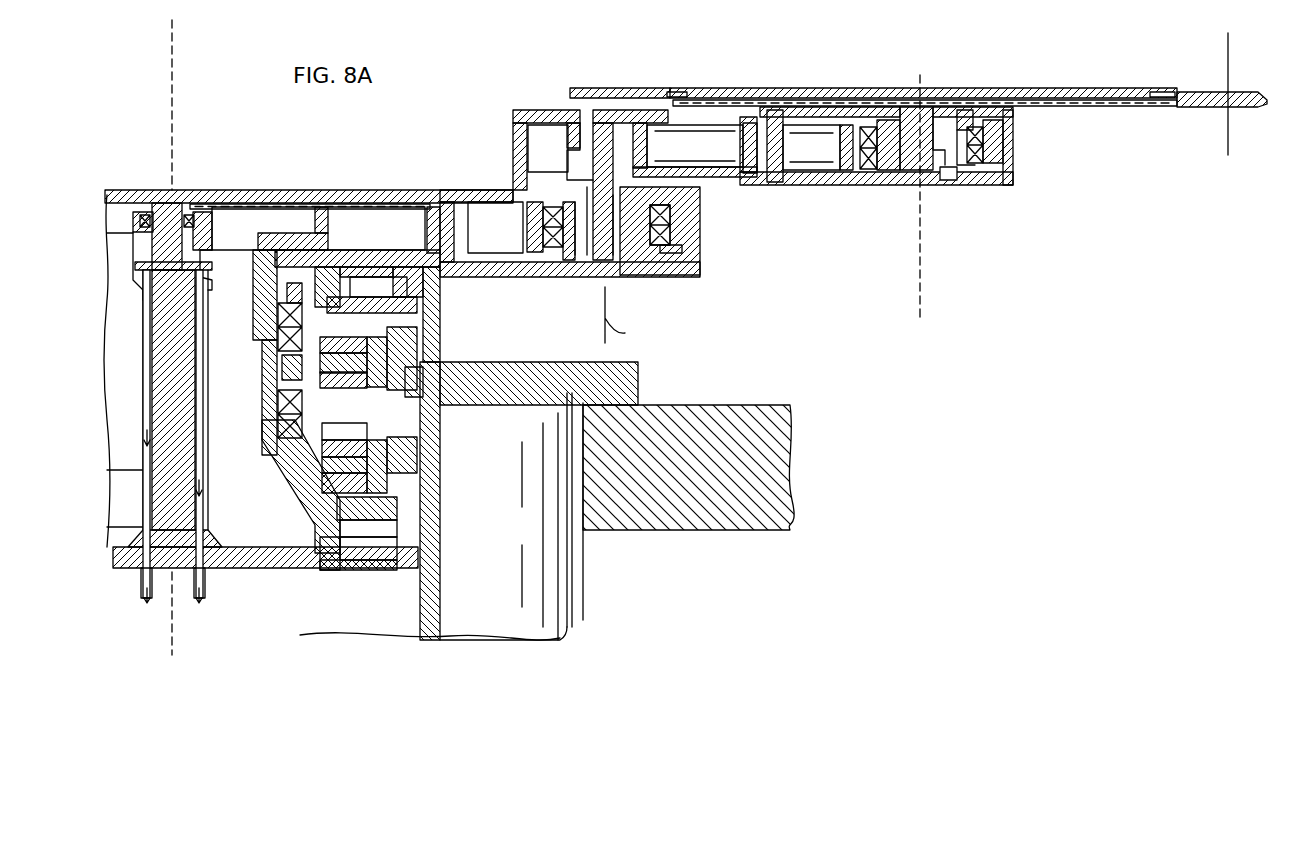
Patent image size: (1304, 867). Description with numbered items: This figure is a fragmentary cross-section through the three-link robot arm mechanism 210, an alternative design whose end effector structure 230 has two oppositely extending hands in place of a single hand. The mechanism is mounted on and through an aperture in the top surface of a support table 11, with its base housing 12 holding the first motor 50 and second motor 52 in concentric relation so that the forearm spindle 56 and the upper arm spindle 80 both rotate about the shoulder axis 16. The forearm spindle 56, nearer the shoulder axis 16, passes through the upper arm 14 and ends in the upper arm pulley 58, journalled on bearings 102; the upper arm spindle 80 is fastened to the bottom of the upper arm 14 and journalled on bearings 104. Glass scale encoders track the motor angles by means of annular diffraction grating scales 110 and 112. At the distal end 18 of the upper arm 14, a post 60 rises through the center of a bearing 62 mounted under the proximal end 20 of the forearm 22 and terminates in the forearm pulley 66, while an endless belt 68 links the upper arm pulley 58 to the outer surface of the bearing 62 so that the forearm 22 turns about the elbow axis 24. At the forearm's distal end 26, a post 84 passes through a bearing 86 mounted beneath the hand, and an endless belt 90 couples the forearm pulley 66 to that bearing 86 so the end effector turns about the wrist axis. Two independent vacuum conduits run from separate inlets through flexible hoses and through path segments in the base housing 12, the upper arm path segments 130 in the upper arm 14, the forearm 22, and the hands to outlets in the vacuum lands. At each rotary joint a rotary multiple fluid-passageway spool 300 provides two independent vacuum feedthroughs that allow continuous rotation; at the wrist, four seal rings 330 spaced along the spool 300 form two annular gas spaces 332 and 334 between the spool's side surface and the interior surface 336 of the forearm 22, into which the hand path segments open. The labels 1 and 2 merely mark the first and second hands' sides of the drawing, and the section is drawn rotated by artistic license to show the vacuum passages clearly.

The first side 1 is at (668, 68).
The second side 2 is at (1177, 68).
The support table 11 is at (725, 405).
The base housing 12 is at (578, 602).
The upper arm 14 is at (347, 190).
The shoulder axis 16 is at (175, 96).
The distal end 18 is at (700, 228).
The proximal end 20 is at (513, 160).
The forearm 22 is at (533, 112).
The elbow axis 24 is at (630, 335).
The distal end 26 is at (1013, 155).
The first motor 50 is at (380, 437).
The second motor 52 is at (395, 390).
The forearm spindle 56 is at (300, 480).
The upper arm pulley 58 is at (120, 217).
The post 60 is at (660, 262).
The bearing 62 is at (542, 212).
The forearm pulley 66 is at (637, 152).
The endless belt 68 is at (388, 234).
The upper arm spindle 80 is at (322, 322).
The post 84 is at (1010, 184).
The bearing 86 is at (1013, 122).
The endless belt 90 is at (721, 151).
The bearings 102 is at (283, 402).
The bearings 104 is at (276, 316).
The annular diffraction grating scale 110 is at (398, 522).
The annular diffraction grating scale 112 is at (441, 303).
The seal plate 130 is at (247, 192).
The robot arm mechanism 210 is at (608, 550).
The end effector structure 230 is at (948, 70).
The rotary multiple fluid-passageway spool 300 is at (176, 197).
The seal rings 330 is at (860, 159).
The annular gas space 332 is at (1013, 133).
The annular gas space 334 is at (877, 167).
The interior surface 336 is at (972, 110).